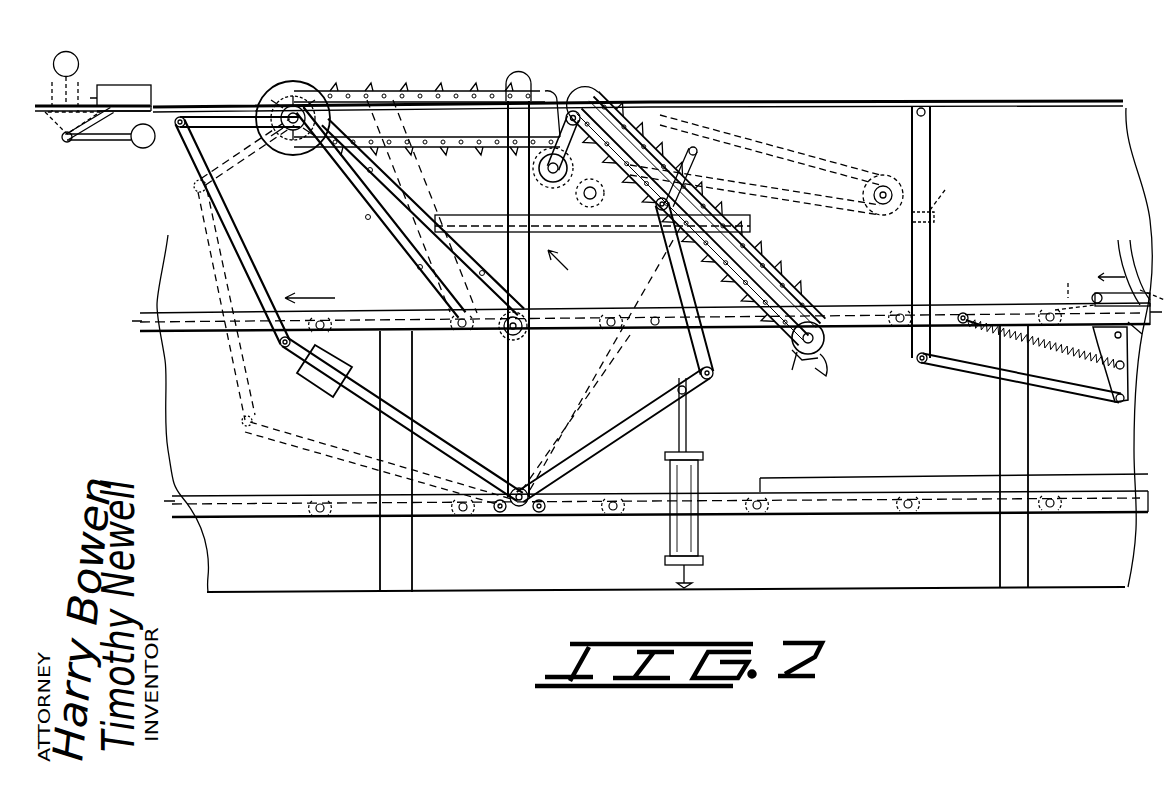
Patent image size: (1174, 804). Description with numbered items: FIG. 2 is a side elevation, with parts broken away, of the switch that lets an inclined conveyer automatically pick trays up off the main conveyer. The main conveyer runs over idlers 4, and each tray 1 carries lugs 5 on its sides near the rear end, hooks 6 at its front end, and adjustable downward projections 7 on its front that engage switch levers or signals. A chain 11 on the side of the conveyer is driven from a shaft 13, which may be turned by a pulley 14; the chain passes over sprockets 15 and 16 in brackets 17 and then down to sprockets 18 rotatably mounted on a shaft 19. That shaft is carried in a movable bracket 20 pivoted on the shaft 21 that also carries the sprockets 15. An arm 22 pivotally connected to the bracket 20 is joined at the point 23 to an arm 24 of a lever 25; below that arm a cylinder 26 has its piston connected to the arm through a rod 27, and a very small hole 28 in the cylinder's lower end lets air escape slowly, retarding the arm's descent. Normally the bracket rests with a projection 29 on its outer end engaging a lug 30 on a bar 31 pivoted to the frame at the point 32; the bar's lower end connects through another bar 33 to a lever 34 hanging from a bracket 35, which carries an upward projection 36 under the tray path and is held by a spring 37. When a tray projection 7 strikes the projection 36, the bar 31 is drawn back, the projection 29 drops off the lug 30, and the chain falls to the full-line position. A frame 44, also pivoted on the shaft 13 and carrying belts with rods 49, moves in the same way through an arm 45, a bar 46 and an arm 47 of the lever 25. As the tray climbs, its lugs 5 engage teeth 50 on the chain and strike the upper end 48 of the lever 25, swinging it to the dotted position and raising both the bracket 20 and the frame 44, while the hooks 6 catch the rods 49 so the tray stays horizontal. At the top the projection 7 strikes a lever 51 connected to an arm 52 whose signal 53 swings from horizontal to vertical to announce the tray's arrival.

The tray 1 is at (140, 86).
The idlers 4 is at (290, 343).
The lugs 5 is at (703, 208).
The hooks 6 is at (430, 230).
The projections 7 is at (105, 114).
The chain 11 is at (432, 91).
The shaft 13 is at (302, 92).
The pulley 14 is at (310, 110).
The sprockets 15 is at (603, 115).
The sprockets 16 is at (562, 195).
The brackets 17 is at (625, 135).
The sprockets 18 is at (826, 340).
The shaft 19 is at (795, 356).
The movable bracket 20 is at (768, 295).
The shaft 21 is at (578, 110).
The arm 22 is at (718, 345).
The pivot point 23 is at (714, 376).
The arm 24 is at (615, 438).
The lever 25 is at (530, 381).
The cylinder 26 is at (700, 480).
The rod 27 is at (690, 425).
The hole 28 is at (668, 540).
The projection 29 is at (830, 368).
The lug 30 is at (934, 222).
The bar 31 is at (928, 155).
The pivot point 32 is at (928, 108).
The bar 33 is at (992, 368).
The lever 34 is at (1130, 375).
The bracket 35 is at (1134, 336).
The projection 36 is at (1067, 290).
The spring 37 is at (1088, 365).
The frame 44 is at (370, 195).
The arm 45 is at (218, 117).
The bar 46 is at (220, 205).
The arm 47 is at (432, 437).
The upper end 48 is at (522, 80).
The rods 49 is at (300, 160).
The teeth 50 is at (752, 253).
The lever 51 is at (90, 140).
The arm 52 is at (108, 142).
The signal 53 is at (145, 148).